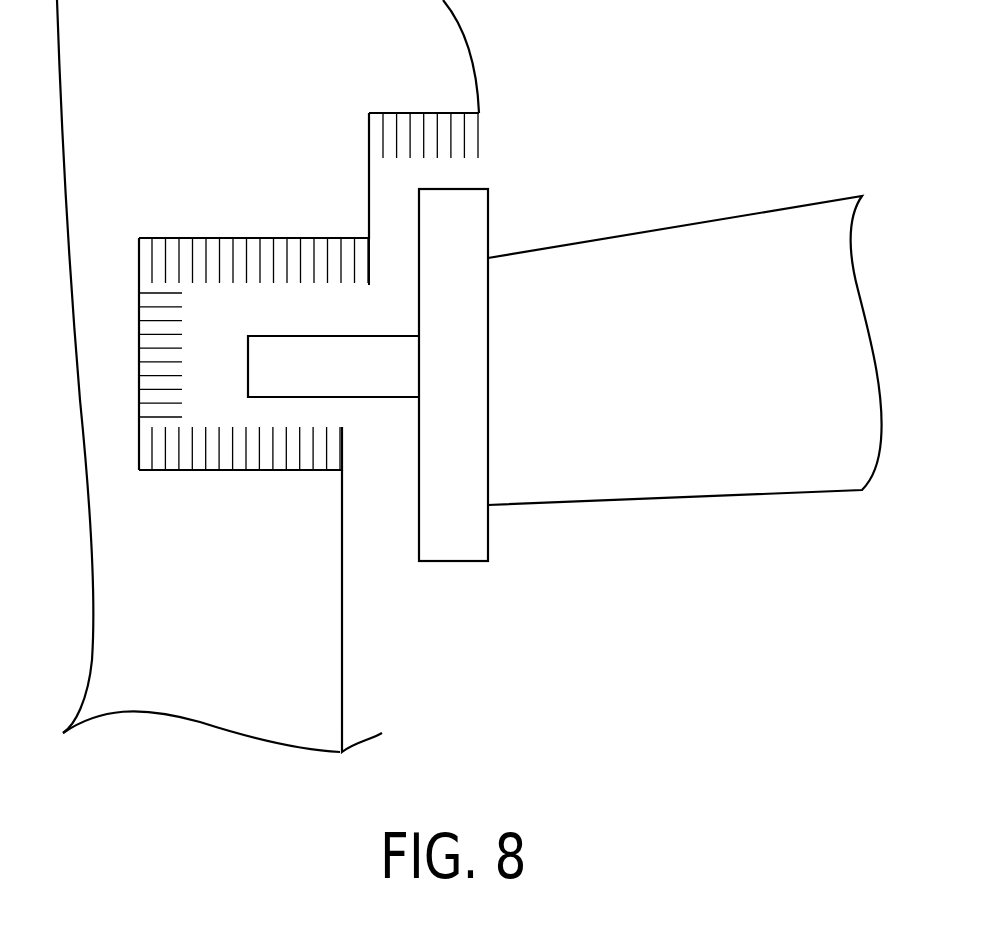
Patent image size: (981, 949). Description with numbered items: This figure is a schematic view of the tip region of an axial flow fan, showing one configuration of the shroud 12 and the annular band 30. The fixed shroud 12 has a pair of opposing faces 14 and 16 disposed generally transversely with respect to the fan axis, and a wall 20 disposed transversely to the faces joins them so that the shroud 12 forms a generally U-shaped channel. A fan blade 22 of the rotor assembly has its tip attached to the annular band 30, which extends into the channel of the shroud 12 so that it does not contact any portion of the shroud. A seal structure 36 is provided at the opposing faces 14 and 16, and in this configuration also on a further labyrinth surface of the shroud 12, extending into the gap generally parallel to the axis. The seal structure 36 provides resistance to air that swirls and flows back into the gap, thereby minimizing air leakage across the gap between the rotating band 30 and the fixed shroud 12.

The shroud 12 is at (339, 602).
The opposing face 14 is at (242, 470).
The opposing face 16 is at (228, 243).
The wall 20 is at (183, 367).
The fan blade 22 is at (652, 485).
The annular band 30 is at (452, 561).
The seal structure 36 is at (420, 132).